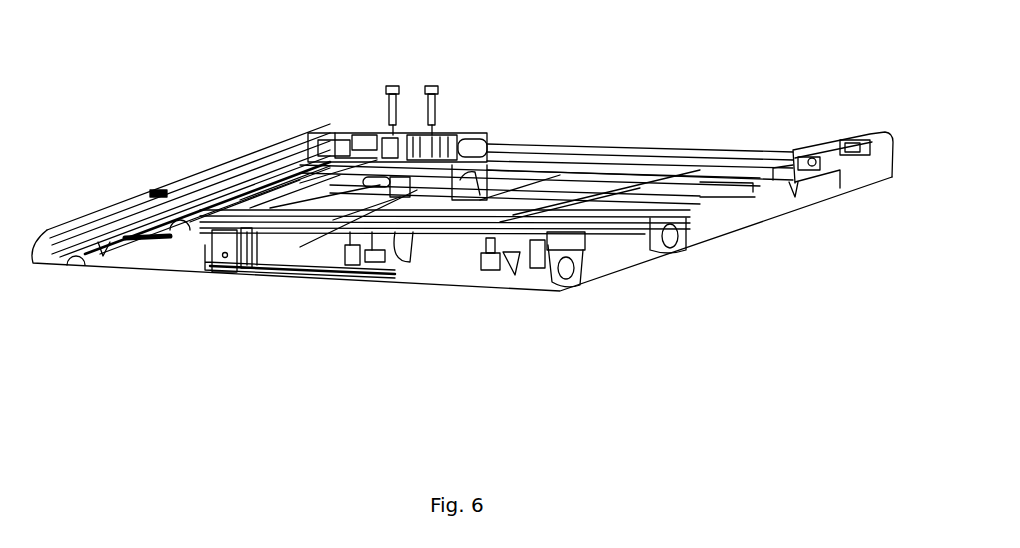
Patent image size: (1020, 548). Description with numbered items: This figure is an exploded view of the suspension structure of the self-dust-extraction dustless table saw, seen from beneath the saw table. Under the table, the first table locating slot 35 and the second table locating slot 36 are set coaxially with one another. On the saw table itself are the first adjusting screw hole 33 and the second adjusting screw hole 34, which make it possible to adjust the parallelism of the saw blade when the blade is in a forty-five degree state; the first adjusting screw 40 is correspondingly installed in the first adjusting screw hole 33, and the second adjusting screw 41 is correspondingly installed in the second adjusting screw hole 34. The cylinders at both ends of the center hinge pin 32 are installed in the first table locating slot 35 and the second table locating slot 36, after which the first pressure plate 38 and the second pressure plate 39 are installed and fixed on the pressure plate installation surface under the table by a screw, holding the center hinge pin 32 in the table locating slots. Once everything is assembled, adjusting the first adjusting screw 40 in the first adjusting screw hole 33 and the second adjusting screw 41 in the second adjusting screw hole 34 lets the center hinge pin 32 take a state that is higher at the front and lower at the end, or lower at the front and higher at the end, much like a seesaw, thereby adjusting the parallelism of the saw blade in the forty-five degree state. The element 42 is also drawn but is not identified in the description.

The center hinge pin 32 is at (477, 188).
The first adjusting screw hole 33 is at (390, 135).
The second adjusting screw hole 34 is at (445, 138).
The first table locating slot 35 is at (340, 133).
The second table locating slot 36 is at (470, 135).
The first pressure plate 38 is at (340, 225).
The second pressure plate 39 is at (563, 283).
The first adjusting screw 40 is at (393, 85).
The second adjusting screw 41 is at (430, 87).
The fastening block 42 is at (492, 275).